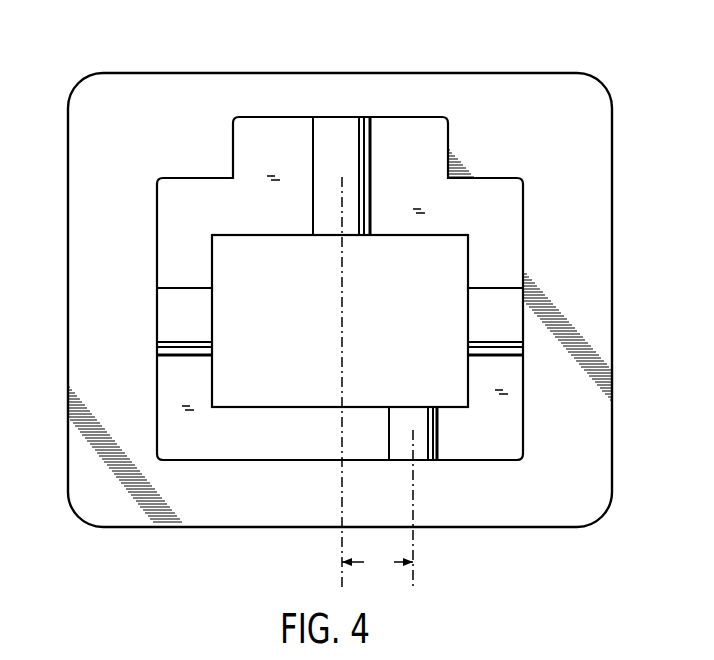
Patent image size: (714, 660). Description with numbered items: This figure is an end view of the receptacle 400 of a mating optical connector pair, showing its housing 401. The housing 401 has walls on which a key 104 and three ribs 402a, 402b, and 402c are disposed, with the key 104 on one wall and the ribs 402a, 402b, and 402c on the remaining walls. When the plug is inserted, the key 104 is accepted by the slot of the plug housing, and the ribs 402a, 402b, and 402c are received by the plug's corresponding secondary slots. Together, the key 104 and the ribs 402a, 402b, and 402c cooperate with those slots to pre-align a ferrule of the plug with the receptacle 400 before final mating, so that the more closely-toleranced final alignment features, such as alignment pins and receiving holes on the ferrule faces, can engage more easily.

The receptacle 400 is at (119, 44).
The housing 401 is at (549, 90).
The rib 402a is at (178, 322).
The rib 402b is at (478, 320).
The rib 402c is at (338, 128).
The key 104 is at (402, 416).